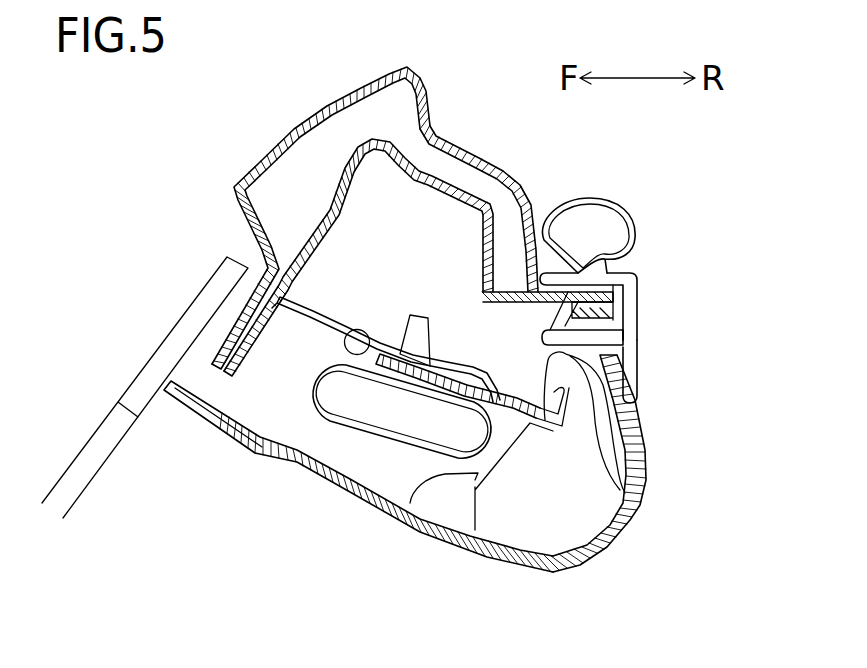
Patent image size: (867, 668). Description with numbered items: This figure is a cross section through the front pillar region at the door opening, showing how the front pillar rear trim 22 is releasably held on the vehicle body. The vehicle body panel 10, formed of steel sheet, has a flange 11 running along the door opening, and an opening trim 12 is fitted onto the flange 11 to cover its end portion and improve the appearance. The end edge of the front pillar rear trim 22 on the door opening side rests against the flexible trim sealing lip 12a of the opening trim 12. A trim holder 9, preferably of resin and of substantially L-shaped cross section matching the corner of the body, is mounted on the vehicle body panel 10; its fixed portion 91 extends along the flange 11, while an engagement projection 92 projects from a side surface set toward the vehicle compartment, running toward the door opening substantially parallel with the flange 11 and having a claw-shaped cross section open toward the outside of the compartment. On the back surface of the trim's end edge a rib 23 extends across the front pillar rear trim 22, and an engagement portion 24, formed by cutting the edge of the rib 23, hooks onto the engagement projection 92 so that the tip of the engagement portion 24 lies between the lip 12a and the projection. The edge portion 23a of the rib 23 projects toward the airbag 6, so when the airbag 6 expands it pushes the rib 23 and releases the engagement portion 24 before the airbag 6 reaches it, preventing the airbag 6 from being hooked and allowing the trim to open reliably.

The airbag 6 is at (312, 408).
The trim holder 9 is at (357, 322).
The vehicle body panel 10 is at (303, 314).
The flange 11 is at (610, 317).
The opening trim 12 is at (638, 280).
The trim sealing lip 12a is at (637, 373).
The front pillar rear trim 22 is at (340, 490).
The rib 23 is at (475, 513).
The edge portion 23a is at (410, 496).
The engagement portion 24 is at (616, 440).
The fixed portion 91 is at (547, 337).
The engagement projection 92 is at (630, 503).